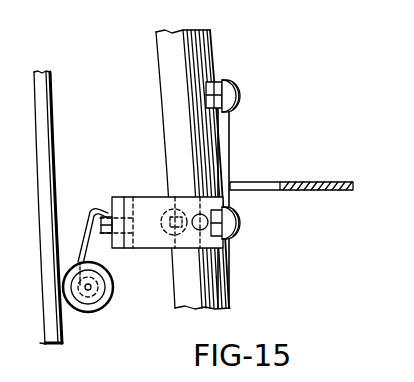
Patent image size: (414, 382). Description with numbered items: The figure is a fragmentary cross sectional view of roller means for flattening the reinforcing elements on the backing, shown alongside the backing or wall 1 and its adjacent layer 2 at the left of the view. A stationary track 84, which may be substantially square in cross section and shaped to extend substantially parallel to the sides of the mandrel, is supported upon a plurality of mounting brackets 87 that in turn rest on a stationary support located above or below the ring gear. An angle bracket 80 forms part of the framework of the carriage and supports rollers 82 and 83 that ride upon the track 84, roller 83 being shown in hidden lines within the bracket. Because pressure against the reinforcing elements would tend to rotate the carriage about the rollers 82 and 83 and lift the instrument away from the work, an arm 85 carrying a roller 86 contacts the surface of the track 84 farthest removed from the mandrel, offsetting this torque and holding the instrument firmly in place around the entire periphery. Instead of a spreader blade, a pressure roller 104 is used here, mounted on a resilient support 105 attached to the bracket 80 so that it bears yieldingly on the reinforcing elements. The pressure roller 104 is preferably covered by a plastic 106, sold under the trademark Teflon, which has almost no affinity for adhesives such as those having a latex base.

The housing wall 1 is at (48, 330).
The panel 2 is at (55, 232).
The angle bracket 80 is at (150, 240).
The roller 82 is at (242, 222).
The roller 83 is at (170, 210).
The stationary track 84 is at (224, 277).
The arm 85 is at (214, 150).
The roller 86 is at (232, 88).
The mounting bracket 87 is at (338, 182).
The pressure roller 104 is at (104, 290).
The resilient support 105 is at (88, 212).
The plastic covering 106 is at (104, 306).